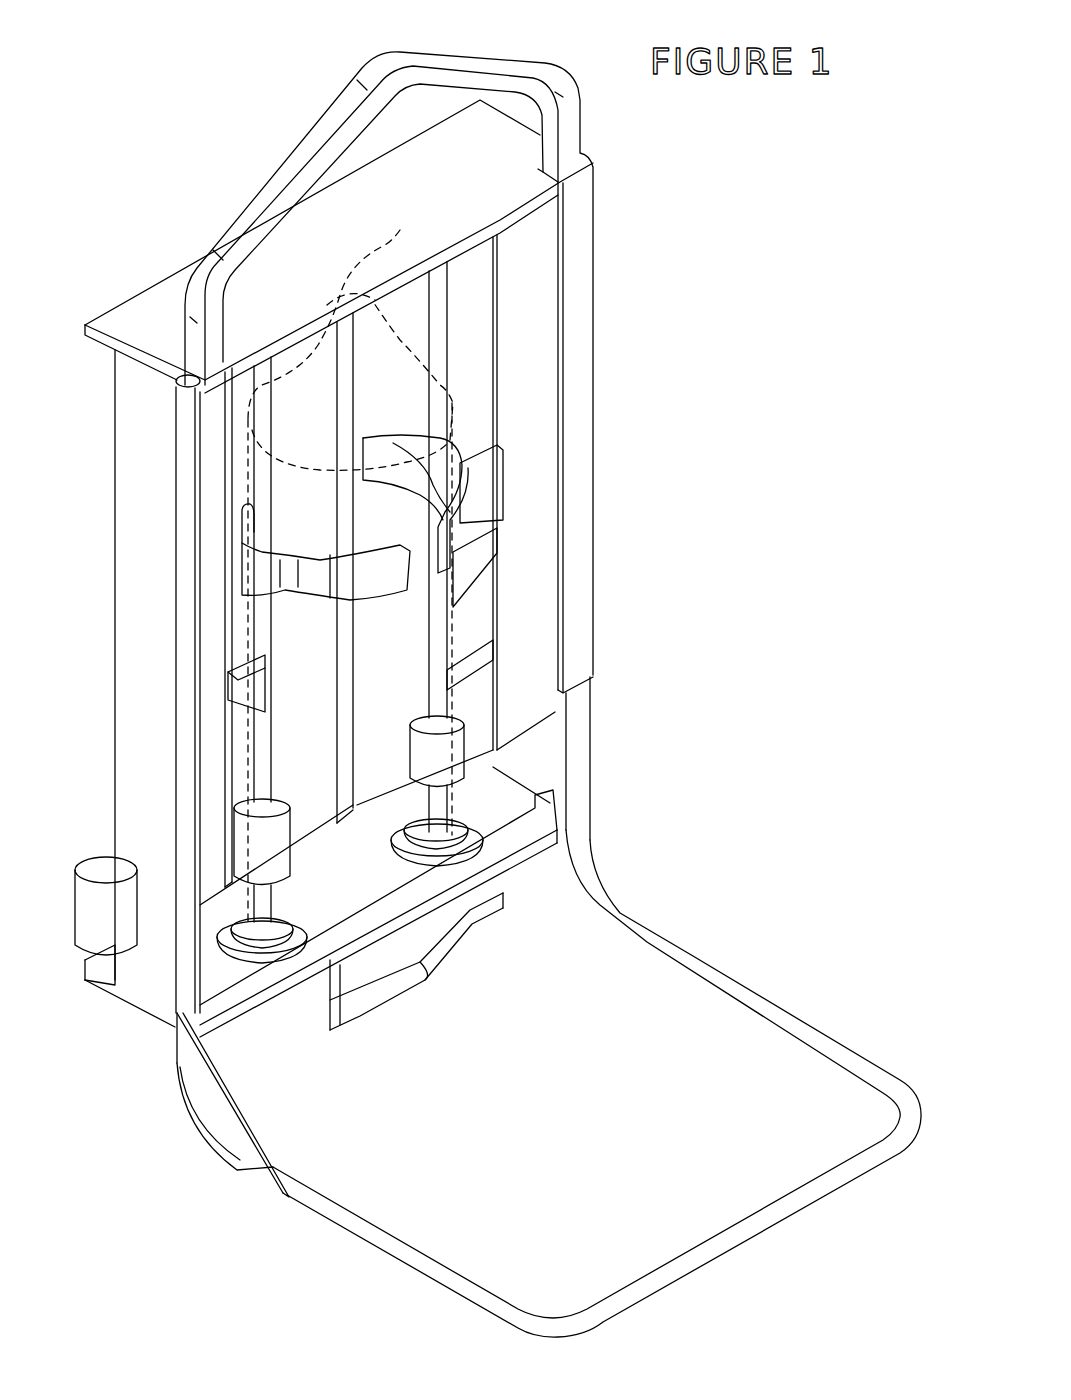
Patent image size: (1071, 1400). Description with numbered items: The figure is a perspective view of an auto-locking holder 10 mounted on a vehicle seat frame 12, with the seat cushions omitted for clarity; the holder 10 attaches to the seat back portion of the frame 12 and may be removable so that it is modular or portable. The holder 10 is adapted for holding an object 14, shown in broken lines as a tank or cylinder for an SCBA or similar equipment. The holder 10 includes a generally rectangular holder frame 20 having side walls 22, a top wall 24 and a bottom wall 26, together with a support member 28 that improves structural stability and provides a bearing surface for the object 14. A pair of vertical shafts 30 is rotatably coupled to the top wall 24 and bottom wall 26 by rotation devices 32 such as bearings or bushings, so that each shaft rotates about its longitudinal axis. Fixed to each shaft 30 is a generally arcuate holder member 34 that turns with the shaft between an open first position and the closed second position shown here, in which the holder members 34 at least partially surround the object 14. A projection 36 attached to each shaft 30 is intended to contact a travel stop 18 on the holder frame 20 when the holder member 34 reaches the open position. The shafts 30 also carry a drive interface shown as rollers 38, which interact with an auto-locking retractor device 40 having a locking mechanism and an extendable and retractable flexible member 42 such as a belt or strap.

The auto-locking holder 10 is at (148, 92).
The vehicle seat frame 12 is at (750, 1000).
The object 14 is at (396, 230).
The travel stop 18 is at (462, 445).
The holder frame 20 is at (113, 455).
The side walls 22 is at (135, 607).
The top wall 24 is at (135, 312).
The bottom wall 26 is at (497, 807).
The support member 28 is at (340, 613).
The shafts 30 is at (445, 300).
The rotation devices 32 is at (300, 885).
The holder member 34 is at (380, 440).
The projection 36 is at (475, 553).
The rollers 38 is at (417, 750).
The auto-locking retractor device 40 is at (95, 915).
The flexible member 42 is at (473, 693).